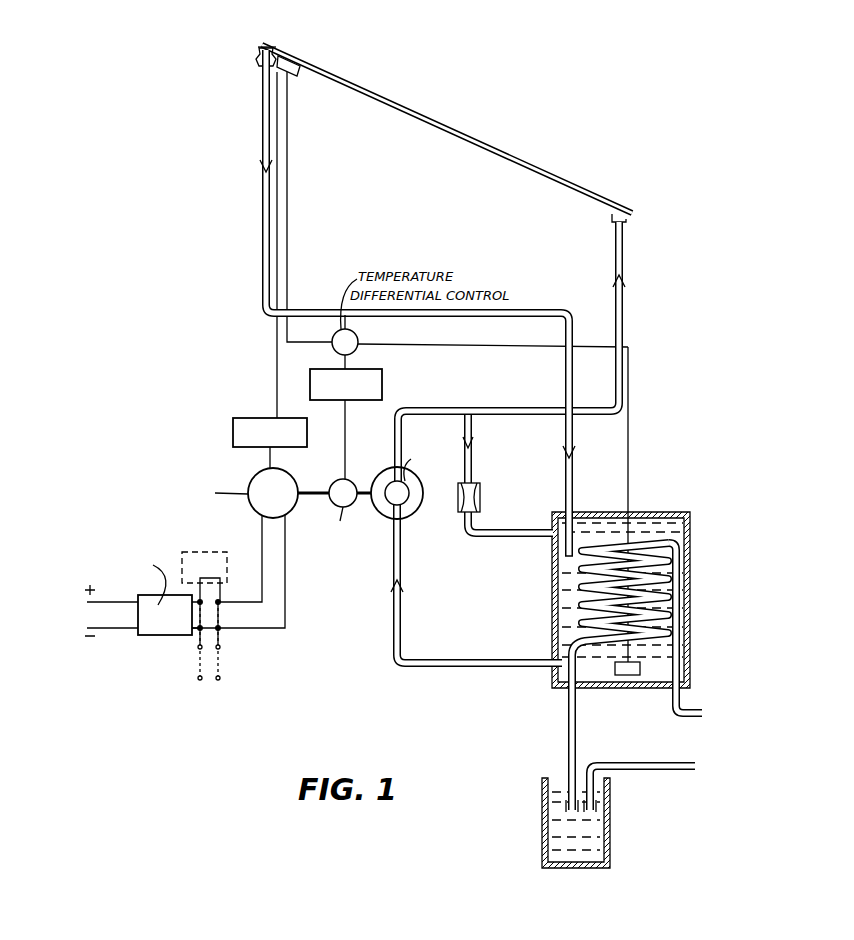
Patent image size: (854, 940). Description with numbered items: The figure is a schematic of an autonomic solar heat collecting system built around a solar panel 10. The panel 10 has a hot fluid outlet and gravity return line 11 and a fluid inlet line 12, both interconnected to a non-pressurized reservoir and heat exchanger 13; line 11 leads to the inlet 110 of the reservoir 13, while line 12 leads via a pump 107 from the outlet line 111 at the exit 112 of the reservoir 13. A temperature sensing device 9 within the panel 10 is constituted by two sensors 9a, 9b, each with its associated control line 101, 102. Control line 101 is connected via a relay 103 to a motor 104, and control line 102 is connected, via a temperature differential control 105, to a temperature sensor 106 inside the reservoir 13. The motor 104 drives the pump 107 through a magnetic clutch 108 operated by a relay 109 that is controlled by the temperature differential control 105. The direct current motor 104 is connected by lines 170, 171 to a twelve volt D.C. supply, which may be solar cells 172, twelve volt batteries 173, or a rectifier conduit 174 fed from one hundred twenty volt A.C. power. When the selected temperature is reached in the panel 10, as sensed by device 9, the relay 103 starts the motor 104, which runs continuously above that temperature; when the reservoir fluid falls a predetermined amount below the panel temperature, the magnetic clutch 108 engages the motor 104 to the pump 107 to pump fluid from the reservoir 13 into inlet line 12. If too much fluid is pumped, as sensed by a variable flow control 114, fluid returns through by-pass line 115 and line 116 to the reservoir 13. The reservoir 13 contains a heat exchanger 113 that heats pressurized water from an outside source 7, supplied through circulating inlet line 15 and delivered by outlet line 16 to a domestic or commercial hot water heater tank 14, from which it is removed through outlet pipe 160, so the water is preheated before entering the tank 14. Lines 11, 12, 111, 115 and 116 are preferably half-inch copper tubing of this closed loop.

The outside source 7 is at (690, 712).
The temperature sensing device 9 is at (297, 66).
The sensor 9a is at (263, 72).
The sensor 9b is at (290, 78).
The solar panel 10 is at (493, 148).
The hot fluid outlet and gravity return line 11 is at (261, 215).
The fluid inlet line 12 is at (625, 257).
The reservoir and heat exchanger 13 is at (692, 618).
The hot water heater tank 14 is at (548, 820).
The circulating inlet line 15 is at (682, 675).
The outlet line 16 is at (565, 739).
The control line 101 is at (277, 253).
The control line 102 is at (288, 232).
The relay 103 is at (233, 423).
The motor 104 is at (262, 515).
The temperature differential control 105 is at (357, 337).
The temperature sensor 106 is at (627, 676).
The pump 107 is at (405, 513).
The magnetic clutch 108 is at (345, 481).
The relay 109 is at (382, 380).
The inlet 110 is at (607, 511).
The outlet line 111 is at (510, 660).
The exit 112 is at (552, 679).
The heat exchanger 113 is at (688, 575).
The variable flow control 114 is at (480, 492).
The by-pass line 115 is at (472, 445).
The line 116 is at (530, 539).
The outlet pipe 160 is at (645, 768).
The line 170 is at (262, 575).
The line 171 is at (288, 532).
The solar cells 172 is at (205, 565).
The 12 volt batteries 173 is at (221, 675).
The rectifier conduit 174 is at (160, 636).